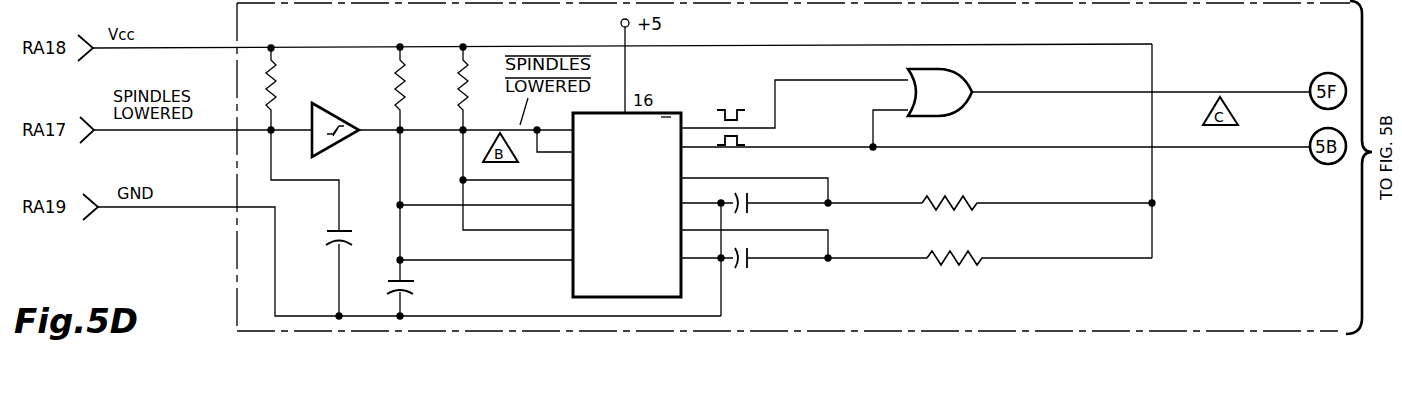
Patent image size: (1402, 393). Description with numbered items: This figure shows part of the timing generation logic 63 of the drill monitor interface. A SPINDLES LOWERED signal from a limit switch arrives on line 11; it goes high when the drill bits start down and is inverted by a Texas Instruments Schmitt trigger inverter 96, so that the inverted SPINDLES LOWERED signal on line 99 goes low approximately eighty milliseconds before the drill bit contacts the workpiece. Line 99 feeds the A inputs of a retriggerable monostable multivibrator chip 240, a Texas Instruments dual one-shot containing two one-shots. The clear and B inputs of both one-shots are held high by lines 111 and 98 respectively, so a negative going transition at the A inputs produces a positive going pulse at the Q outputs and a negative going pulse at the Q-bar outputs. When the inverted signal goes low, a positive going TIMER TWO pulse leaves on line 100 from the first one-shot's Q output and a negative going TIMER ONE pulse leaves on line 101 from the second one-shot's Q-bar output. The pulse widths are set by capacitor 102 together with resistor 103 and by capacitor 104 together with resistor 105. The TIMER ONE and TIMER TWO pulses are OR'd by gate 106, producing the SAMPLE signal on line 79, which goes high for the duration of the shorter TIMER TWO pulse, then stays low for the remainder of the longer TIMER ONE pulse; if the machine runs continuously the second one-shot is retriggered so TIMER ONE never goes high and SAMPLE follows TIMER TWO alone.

The line 11 is at (163, 135).
The timing generation logic 63 is at (237, 240).
The line 79 is at (1170, 91).
The Schmitt trigger inverter 96 is at (338, 114).
The line 98 is at (400, 126).
The line 99 is at (395, 132).
The line 100 is at (756, 152).
The line 101 is at (758, 124).
The capacitor 102 is at (750, 202).
The resistor 103 is at (965, 198).
The capacitor 104 is at (752, 257).
The resistor 105 is at (965, 256).
The gate 106 is at (960, 104).
The line 111 is at (465, 127).
The retriggerable monostable multivibrator chip 240 is at (573, 278).